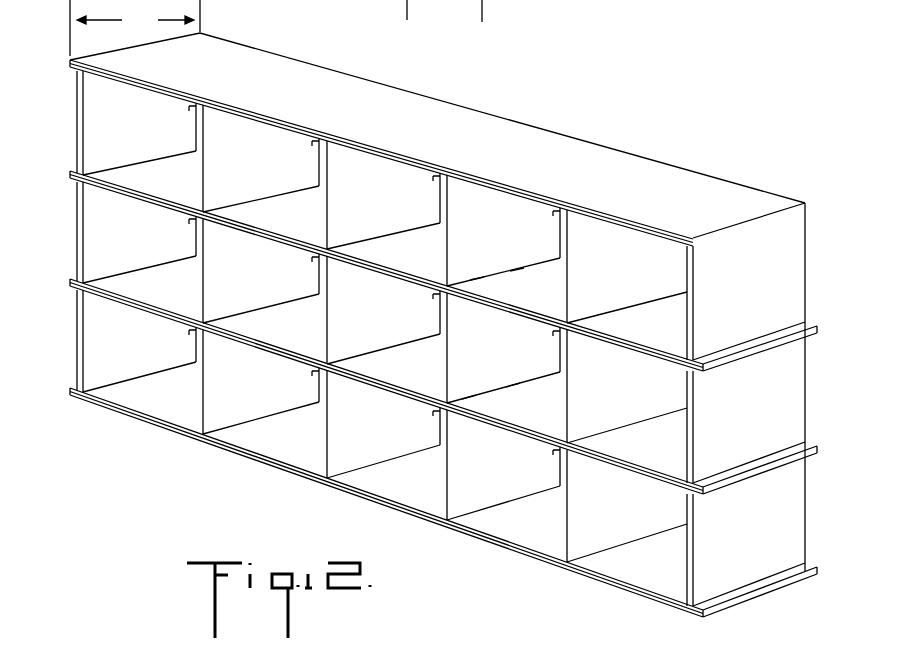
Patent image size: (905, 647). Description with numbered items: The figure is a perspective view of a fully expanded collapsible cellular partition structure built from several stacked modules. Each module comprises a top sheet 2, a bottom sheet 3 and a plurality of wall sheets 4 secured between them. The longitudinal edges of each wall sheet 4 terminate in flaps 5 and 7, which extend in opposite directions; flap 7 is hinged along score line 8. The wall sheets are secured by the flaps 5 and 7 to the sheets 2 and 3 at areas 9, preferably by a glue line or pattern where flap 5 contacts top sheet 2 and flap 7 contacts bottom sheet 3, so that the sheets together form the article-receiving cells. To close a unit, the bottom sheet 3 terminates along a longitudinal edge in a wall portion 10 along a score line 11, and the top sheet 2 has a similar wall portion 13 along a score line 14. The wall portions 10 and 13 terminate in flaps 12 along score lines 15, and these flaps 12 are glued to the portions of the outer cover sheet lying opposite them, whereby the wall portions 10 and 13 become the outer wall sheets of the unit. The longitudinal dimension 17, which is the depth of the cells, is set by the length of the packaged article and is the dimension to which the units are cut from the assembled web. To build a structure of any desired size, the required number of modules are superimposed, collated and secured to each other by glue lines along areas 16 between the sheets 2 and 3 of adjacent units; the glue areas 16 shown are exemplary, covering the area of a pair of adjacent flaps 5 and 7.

The top sheet 2 is at (540, 147).
The bottom sheet 3 is at (527, 298).
The wall sheet 4 is at (630, 270).
The flap 5 is at (435, 183).
The flap 7 is at (517, 270).
The score line 8 is at (475, 273).
The area 9 is at (440, 167).
The wall portion 10 is at (77, 110).
The score line 11 is at (78, 393).
The flap 12 is at (70, 63).
The wall portion 13 is at (795, 238).
The score line 14 is at (752, 215).
The score line 15 is at (795, 330).
The glue area 16 is at (322, 248).
The longitudinal dimension 17 is at (276, 28).